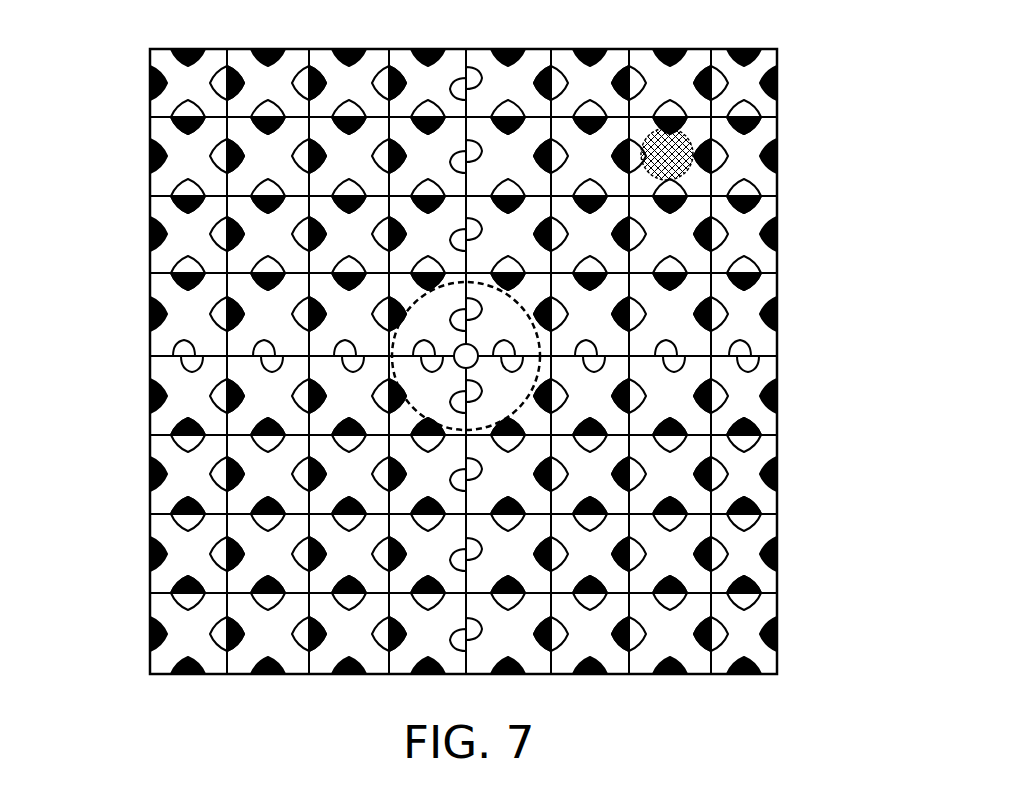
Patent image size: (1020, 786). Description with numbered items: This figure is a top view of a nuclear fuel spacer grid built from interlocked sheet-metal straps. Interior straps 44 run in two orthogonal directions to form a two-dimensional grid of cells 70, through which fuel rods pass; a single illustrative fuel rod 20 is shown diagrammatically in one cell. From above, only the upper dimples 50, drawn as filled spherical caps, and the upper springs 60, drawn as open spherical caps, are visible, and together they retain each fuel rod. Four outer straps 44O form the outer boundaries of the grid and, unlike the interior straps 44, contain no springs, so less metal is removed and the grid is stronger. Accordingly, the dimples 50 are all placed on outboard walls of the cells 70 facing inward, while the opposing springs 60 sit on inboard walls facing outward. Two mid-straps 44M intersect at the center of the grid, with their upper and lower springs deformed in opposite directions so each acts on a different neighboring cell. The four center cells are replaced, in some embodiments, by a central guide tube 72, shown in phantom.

The fuel rod 20 is at (722, 143).
The interior strap 44 is at (232, 268).
The outer strap 44O is at (636, 47).
The mid-strap 44M is at (758, 360).
The upper dimple 50 is at (753, 285).
The upper spring 60 is at (752, 262).
The cell 70 is at (662, 227).
The central guide tube 72 is at (520, 405).